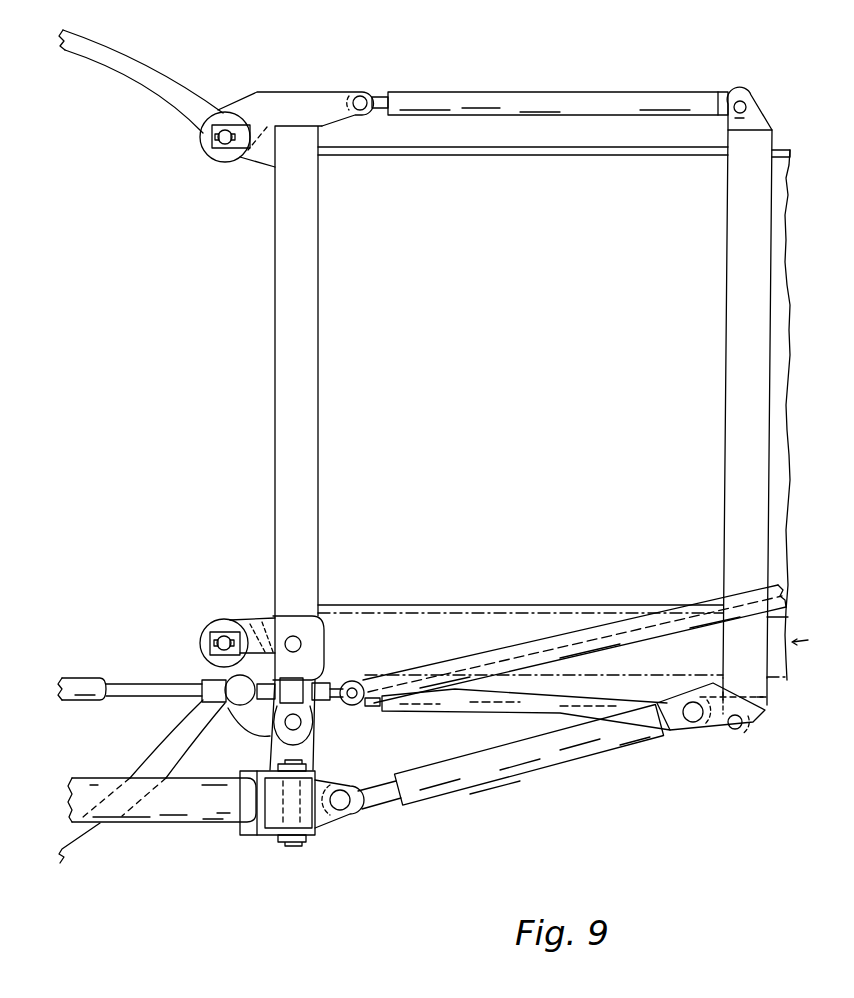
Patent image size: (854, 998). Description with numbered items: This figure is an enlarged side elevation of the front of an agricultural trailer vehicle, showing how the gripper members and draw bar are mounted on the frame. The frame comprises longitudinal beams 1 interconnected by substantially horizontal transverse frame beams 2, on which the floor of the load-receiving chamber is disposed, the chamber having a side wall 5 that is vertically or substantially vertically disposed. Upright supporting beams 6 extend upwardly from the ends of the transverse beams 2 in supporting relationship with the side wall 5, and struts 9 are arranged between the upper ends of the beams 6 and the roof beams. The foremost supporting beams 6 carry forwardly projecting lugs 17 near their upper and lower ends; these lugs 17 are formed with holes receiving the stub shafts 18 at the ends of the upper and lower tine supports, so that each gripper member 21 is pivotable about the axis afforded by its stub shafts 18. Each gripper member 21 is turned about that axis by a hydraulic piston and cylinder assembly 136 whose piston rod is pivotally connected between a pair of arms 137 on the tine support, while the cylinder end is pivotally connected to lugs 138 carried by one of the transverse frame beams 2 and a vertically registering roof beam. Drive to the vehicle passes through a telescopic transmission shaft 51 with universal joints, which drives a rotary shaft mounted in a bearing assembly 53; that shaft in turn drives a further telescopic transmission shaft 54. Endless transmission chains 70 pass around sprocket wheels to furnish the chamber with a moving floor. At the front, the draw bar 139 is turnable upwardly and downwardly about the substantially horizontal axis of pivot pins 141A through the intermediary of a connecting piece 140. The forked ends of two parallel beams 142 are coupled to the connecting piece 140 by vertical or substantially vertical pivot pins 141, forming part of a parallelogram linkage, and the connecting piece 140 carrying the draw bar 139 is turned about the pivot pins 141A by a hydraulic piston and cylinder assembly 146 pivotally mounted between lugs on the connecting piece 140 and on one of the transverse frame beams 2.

The longitudinal beam 1 is at (800, 655).
The transverse frame beam 2 is at (770, 697).
The side wall 5 is at (786, 215).
The upright supporting beam 6 is at (318, 358).
The strut 9 is at (518, 152).
The lug 17 is at (254, 168).
The stub shaft 18 is at (213, 140).
The gripper member 21 is at (125, 55).
The telescopic transmission shaft 51 is at (100, 680).
The bearing assembly 53 is at (300, 670).
The telescopic transmission shaft 54 is at (706, 604).
The endless transmission chain 70 is at (540, 607).
The hydraulic piston and cylinder assembly 136 is at (532, 92).
The arm 137 is at (302, 92).
The lug 138 is at (760, 108).
The draw bar 139 is at (167, 828).
The connecting piece 140 is at (316, 760).
The pivot pin 141 is at (294, 846).
The pivot pin 141A is at (286, 740).
The parallel beam 142 is at (131, 777).
The hydraulic piston and cylinder assembly 146 is at (520, 776).